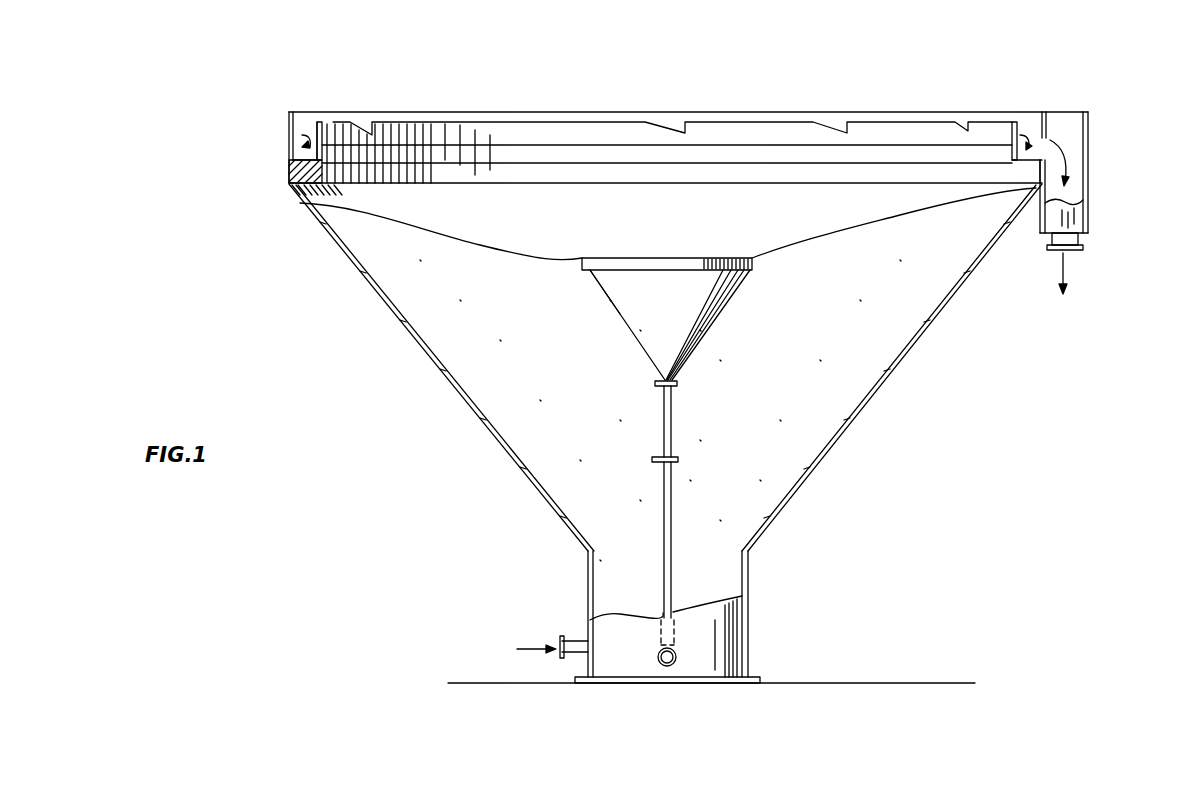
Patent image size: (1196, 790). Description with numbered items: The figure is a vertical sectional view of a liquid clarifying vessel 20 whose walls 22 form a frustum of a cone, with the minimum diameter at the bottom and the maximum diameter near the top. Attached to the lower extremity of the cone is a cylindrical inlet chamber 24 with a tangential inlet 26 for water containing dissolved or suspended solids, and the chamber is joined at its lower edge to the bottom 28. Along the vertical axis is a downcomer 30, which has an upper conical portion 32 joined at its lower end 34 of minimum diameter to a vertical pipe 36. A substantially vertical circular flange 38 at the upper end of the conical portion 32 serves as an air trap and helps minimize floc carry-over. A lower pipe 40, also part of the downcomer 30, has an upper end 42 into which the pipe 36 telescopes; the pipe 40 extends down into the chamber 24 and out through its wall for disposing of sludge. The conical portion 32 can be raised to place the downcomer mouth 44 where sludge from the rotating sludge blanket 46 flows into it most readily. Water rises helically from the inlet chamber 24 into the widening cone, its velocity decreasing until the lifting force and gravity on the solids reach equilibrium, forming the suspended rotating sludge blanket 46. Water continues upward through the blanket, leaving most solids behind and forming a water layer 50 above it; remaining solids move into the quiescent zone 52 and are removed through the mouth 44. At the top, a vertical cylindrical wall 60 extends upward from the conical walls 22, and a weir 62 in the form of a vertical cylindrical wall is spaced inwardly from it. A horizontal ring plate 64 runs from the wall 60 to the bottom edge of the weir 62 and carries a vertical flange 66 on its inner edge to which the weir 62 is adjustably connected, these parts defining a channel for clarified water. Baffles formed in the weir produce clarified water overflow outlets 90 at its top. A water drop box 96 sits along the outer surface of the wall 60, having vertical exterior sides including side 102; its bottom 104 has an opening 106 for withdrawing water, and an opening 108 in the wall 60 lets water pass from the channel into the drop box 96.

The vessel 20 is at (343, 318).
The walls 22 is at (863, 407).
The cylindrical inlet chamber 24 is at (750, 612).
The tangential inlet 26 is at (572, 640).
The bottom 28 is at (712, 684).
The downcomer 30 is at (725, 352).
The upper conical portion 32 is at (720, 314).
The lower end 34 is at (648, 373).
The pipe 36 is at (673, 424).
The circular flange 38 is at (578, 268).
The pipe 40 is at (673, 517).
The upper end 42 is at (655, 463).
The downcomer mouth 44 is at (705, 260).
The rotating sludge blanket 46 is at (548, 252).
The water layer 50 is at (605, 205).
The quiescent zone 52 is at (677, 236).
The vertical cylindrical wall 60 is at (288, 130).
The weir 62 is at (324, 138).
The horizontal ring plate 64 is at (288, 183).
The vertical flange 66 is at (303, 131).
The clarified water overflow outlets 90 is at (494, 130).
The water drop box 96 is at (1093, 163).
The exterior side 102 is at (1080, 212).
The bottom 104 is at (1085, 247).
The opening 106 is at (1070, 253).
The opening 108 is at (1053, 142).